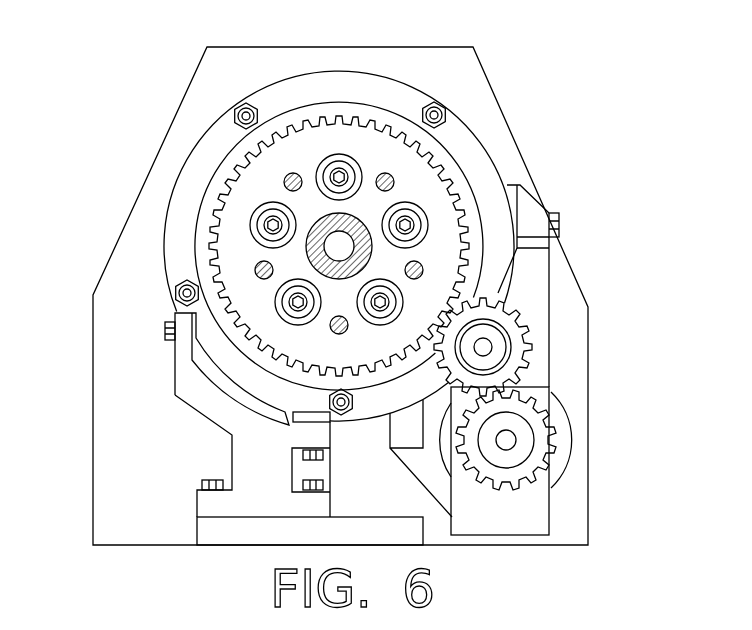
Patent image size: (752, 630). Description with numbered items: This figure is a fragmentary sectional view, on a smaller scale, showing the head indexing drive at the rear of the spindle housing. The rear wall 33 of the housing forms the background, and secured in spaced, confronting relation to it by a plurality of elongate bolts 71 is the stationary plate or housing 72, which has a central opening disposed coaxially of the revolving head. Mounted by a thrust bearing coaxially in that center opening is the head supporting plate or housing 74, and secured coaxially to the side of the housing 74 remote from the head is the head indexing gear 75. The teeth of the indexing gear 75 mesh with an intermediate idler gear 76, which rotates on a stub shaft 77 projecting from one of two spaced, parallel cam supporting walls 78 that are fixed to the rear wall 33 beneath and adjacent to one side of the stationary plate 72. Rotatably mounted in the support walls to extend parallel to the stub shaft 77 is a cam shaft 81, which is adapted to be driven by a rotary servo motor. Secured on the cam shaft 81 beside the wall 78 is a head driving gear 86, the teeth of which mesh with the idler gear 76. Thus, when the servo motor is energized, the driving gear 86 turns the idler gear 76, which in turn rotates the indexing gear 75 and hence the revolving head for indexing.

The rear wall 33 is at (207, 65).
The elongate bolts 71 is at (232, 107).
The stationary plate 72 is at (193, 145).
The head supporting plate 74 is at (283, 75).
The head indexing gear 75 is at (208, 218).
The idler gear 76 is at (528, 325).
The stub shaft 77 is at (492, 352).
The cam supporting wall 78 is at (540, 277).
The cam shaft 81 is at (515, 443).
The head driving gear 86 is at (553, 440).